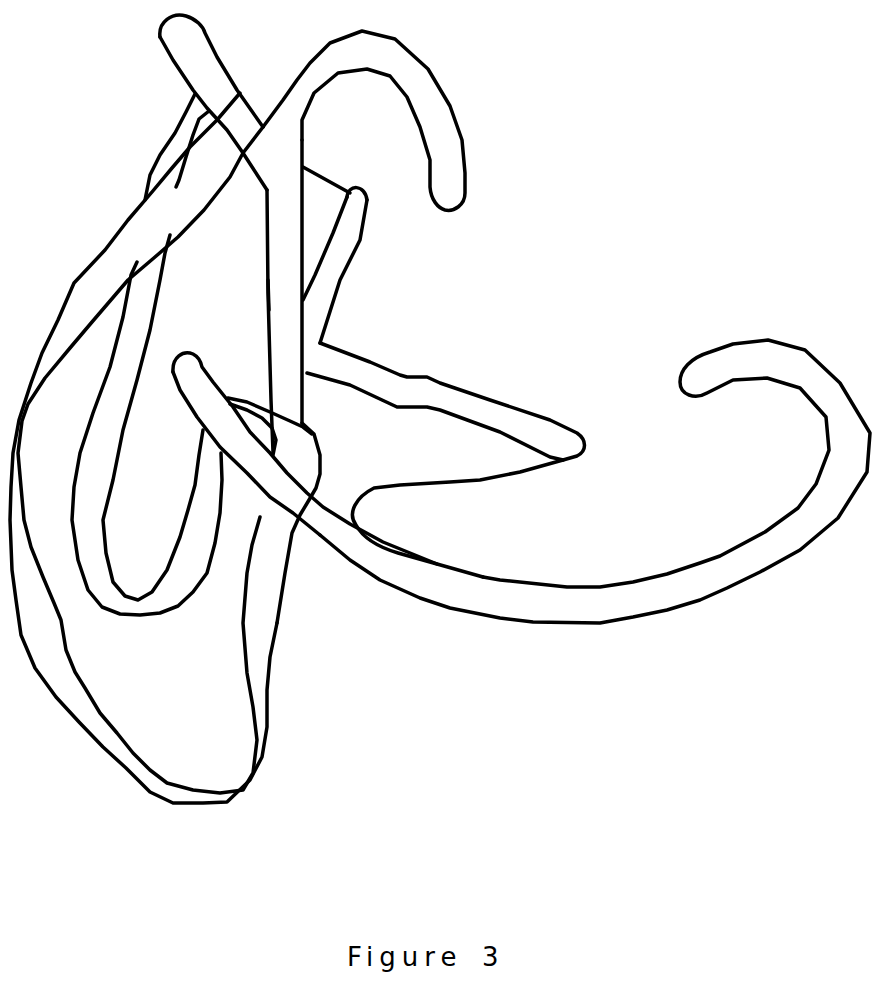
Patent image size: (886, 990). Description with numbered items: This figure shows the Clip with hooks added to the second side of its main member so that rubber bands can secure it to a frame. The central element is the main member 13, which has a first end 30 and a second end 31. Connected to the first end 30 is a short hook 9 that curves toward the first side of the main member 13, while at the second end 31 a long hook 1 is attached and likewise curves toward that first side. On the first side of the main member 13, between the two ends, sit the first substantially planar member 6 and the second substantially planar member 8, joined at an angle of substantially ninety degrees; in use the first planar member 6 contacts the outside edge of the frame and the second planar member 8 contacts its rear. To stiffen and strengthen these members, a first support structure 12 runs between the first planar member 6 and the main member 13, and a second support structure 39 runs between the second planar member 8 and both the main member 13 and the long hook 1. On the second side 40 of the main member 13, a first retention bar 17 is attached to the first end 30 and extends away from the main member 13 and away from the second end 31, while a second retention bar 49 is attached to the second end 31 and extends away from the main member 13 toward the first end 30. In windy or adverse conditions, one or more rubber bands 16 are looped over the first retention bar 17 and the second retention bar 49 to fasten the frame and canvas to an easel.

The long hook 1 is at (730, 577).
The first substantially planar member 6 is at (340, 267).
The second substantially planar member 8 is at (440, 393).
The short hook 9 is at (407, 67).
The first support structure 12 is at (320, 210).
The main member 13 is at (282, 293).
The rubber bands 16 is at (260, 655).
The first retention bar 17 is at (180, 43).
The first end 30 is at (280, 147).
The second end 31 is at (275, 477).
The second support structure 39 is at (423, 470).
The second side 40 is at (268, 253).
The second retention bar 49 is at (192, 370).